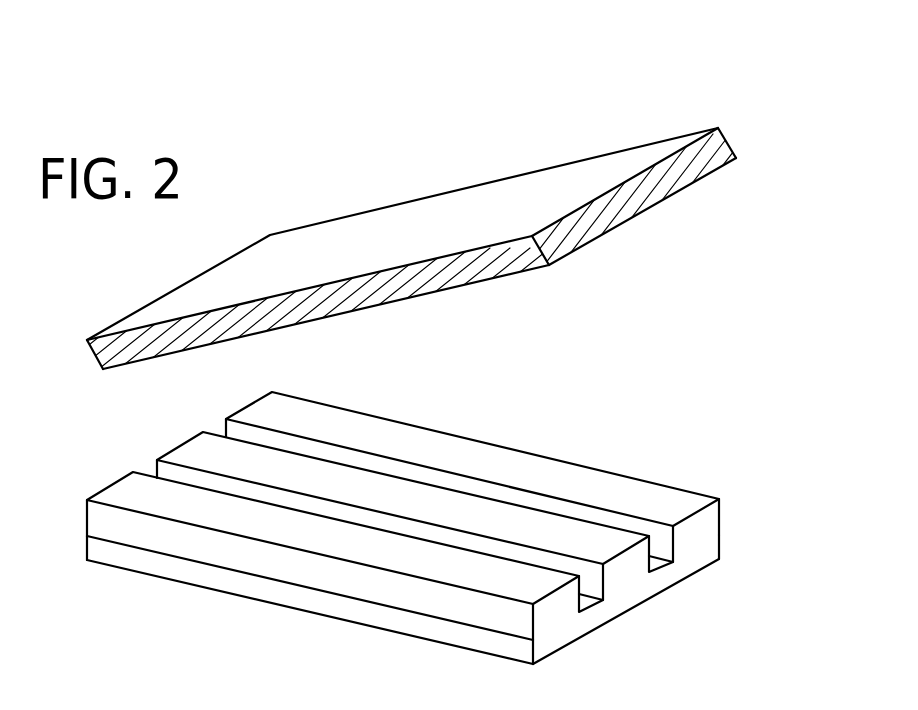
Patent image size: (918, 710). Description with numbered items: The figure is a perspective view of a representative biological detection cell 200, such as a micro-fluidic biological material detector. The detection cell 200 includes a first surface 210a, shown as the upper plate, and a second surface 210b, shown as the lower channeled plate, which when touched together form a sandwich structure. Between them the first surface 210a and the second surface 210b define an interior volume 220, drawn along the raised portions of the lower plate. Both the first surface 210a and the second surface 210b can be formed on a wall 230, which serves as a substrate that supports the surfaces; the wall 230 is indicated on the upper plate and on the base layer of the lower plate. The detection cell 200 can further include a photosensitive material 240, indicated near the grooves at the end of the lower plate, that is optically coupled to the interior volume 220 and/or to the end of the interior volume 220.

The detection cell 200 is at (662, 78).
The first surface 210a is at (733, 154).
The second surface 210b is at (713, 551).
The interior volume 220 is at (598, 517).
The wall 230 is at (142, 310).
The photosensitive material 240 is at (630, 563).